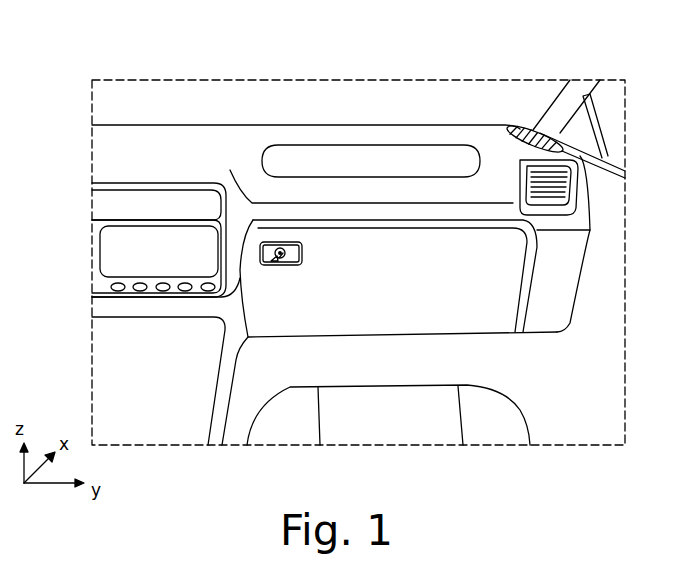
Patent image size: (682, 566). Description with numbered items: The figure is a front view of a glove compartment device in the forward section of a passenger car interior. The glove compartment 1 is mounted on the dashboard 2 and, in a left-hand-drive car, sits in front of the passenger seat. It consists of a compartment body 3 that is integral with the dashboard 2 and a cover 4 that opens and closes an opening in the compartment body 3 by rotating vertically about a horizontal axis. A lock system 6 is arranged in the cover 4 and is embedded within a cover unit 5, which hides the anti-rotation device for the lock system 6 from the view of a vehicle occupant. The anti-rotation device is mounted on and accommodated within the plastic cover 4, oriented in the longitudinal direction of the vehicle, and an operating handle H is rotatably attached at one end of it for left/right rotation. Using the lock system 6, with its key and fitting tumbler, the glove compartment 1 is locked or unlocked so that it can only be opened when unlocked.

The glove compartment 1 is at (490, 335).
The dashboard 2 is at (256, 135).
The compartment body 3 is at (537, 250).
The cover 4 is at (457, 300).
The cover unit 5 is at (290, 267).
The lock system 6 is at (268, 265).
The operating handle H is at (300, 250).